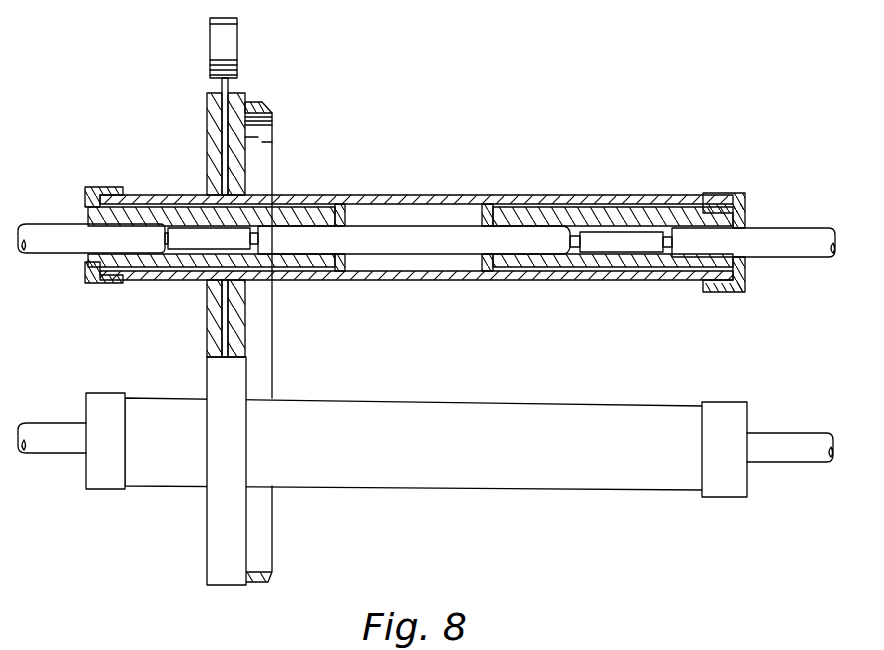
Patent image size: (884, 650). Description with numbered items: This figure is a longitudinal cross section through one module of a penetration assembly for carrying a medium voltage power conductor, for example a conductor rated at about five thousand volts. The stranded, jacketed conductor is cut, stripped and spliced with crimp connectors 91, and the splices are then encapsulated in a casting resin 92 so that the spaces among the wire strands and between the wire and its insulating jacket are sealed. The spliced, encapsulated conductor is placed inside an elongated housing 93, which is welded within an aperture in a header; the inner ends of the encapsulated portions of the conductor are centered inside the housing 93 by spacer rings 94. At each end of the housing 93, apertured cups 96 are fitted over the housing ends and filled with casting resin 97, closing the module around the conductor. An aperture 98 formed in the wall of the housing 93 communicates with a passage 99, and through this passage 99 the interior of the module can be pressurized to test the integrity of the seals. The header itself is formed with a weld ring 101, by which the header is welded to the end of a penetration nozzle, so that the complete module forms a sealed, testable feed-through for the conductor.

The crimp connectors 91 is at (627, 234).
The casting resin 92 is at (585, 215).
The elongated housing 93 is at (474, 202).
The spacer rings 94 is at (347, 203).
The apertured cups 96 is at (712, 194).
The casting resin 97 is at (95, 192).
The aperture 98 is at (222, 197).
The passage 99 is at (228, 150).
The weld ring 101 is at (258, 102).